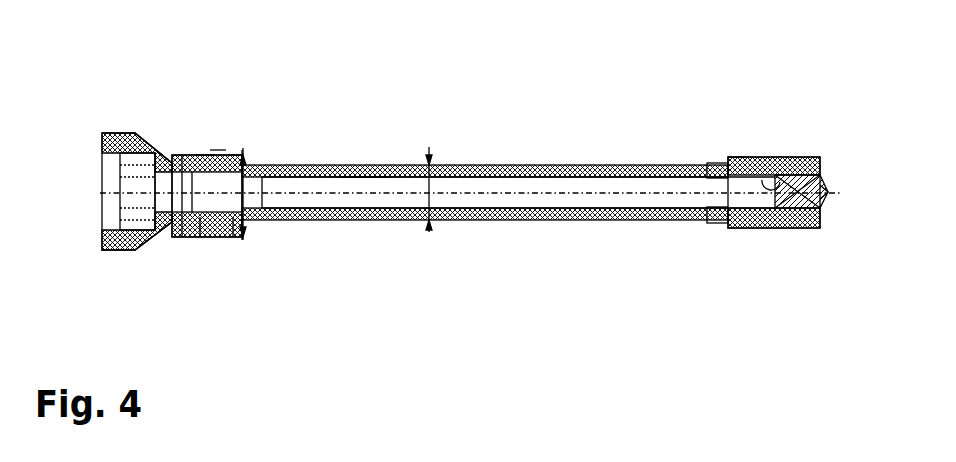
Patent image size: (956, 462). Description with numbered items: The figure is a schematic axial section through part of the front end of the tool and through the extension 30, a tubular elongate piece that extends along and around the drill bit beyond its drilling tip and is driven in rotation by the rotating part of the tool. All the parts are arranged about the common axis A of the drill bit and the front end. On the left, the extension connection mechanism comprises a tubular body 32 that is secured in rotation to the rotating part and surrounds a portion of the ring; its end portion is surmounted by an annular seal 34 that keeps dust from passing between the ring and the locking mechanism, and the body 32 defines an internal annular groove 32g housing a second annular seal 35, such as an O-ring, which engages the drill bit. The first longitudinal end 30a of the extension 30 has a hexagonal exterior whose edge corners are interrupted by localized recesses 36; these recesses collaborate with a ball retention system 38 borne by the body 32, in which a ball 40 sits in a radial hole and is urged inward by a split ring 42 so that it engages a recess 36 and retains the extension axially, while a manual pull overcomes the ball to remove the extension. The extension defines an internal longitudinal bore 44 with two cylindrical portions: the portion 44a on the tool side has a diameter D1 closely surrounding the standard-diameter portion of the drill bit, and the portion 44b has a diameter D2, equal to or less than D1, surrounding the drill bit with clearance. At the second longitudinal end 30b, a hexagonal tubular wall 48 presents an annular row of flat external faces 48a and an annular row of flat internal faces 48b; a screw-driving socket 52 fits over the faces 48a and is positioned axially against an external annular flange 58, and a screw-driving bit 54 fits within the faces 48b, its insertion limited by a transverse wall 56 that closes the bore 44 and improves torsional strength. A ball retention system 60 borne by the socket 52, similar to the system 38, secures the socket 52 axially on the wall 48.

The extension 30 is at (475, 161).
The first longitudinal end 30a is at (243, 242).
The second longitudinal end 30b is at (748, 227).
The tubular body 32 is at (172, 143).
The internal annular groove 32g is at (173, 165).
The annular seal 34 is at (112, 252).
The annular seal 35 is at (178, 235).
The localized recess 36 is at (195, 235).
The ball retention system 38 is at (219, 148).
The ball 40 is at (233, 153).
The split ring 42 is at (205, 153).
The internal longitudinal bore 44 is at (503, 200).
The cylindrical bore portion 44a is at (258, 203).
The cylindrical bore portion 44b is at (363, 185).
The tubular wall 48 is at (750, 158).
The flat external faces 48a is at (790, 163).
The flat internal faces 48b is at (763, 227).
The screw-driving socket 52 is at (817, 163).
The screw-driving bit 54 is at (830, 192).
The transverse wall 56 is at (718, 207).
The external annular flange 58 is at (730, 158).
The ball retention system 60 is at (773, 163).
The axis A is at (562, 193).
The diameter D1 is at (243, 238).
The diameter D2 is at (429, 233).